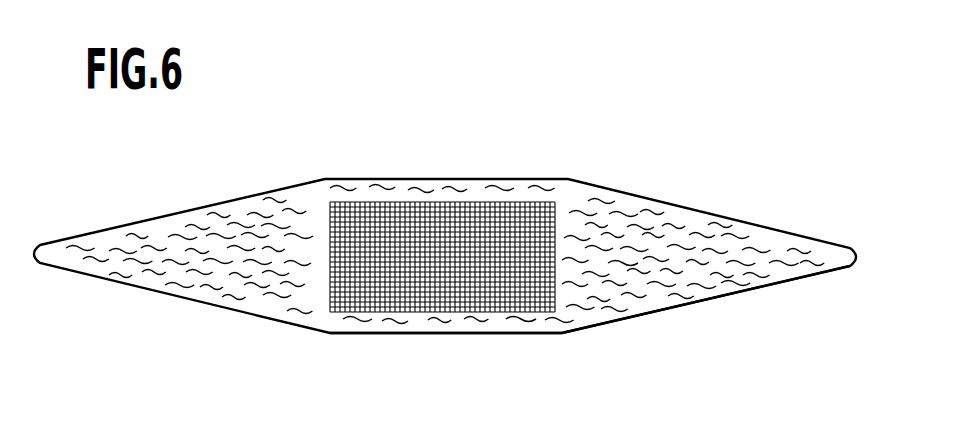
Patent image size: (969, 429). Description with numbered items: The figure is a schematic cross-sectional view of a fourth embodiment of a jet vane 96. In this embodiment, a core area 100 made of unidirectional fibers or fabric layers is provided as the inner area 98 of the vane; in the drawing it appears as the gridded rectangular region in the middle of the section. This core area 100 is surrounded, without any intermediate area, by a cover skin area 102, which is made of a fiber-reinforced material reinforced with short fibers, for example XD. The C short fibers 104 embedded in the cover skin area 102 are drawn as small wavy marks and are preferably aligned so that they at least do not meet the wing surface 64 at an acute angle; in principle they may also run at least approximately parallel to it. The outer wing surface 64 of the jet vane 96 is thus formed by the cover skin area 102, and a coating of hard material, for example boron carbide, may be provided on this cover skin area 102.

The wing surface 64 is at (147, 220).
The jet vane 96 is at (445, 246).
The inner area 98 is at (386, 324).
The core area 100 is at (468, 287).
The cover skin area 102 is at (665, 302).
The C short fibers 104 is at (698, 228).